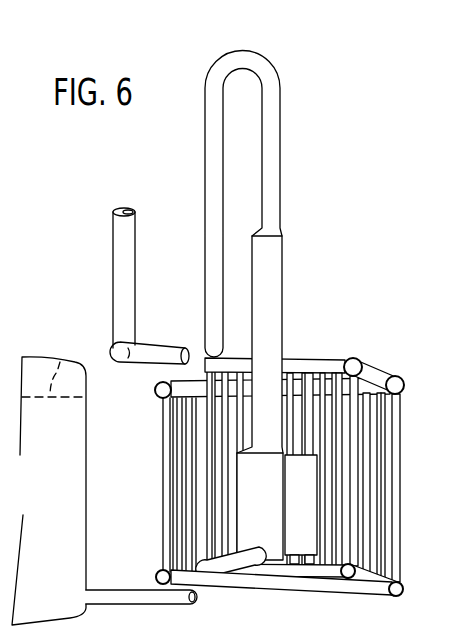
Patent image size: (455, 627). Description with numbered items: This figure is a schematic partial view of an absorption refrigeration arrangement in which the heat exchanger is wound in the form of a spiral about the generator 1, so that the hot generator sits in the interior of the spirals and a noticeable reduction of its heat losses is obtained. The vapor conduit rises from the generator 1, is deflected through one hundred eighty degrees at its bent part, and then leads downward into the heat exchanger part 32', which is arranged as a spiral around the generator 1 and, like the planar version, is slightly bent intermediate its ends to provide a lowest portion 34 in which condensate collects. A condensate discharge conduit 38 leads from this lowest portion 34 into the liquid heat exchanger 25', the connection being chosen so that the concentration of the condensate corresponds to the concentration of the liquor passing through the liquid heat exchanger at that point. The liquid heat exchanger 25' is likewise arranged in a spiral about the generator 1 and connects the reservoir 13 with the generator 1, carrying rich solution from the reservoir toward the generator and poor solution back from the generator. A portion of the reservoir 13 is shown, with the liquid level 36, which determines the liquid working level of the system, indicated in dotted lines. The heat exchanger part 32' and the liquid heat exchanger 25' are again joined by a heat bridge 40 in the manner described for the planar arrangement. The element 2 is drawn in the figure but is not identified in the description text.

The generator 1 is at (277, 562).
The tube 2 is at (135, 229).
The reservoir 13 is at (86, 517).
The liquid heat exchanger 25' is at (299, 595).
The heat exchanger part 32' is at (149, 339).
The lowest portion 34 is at (155, 391).
The liquid level 36 is at (60, 362).
The condensate discharge conduit 38 is at (163, 466).
The heat bridge 40 is at (400, 477).